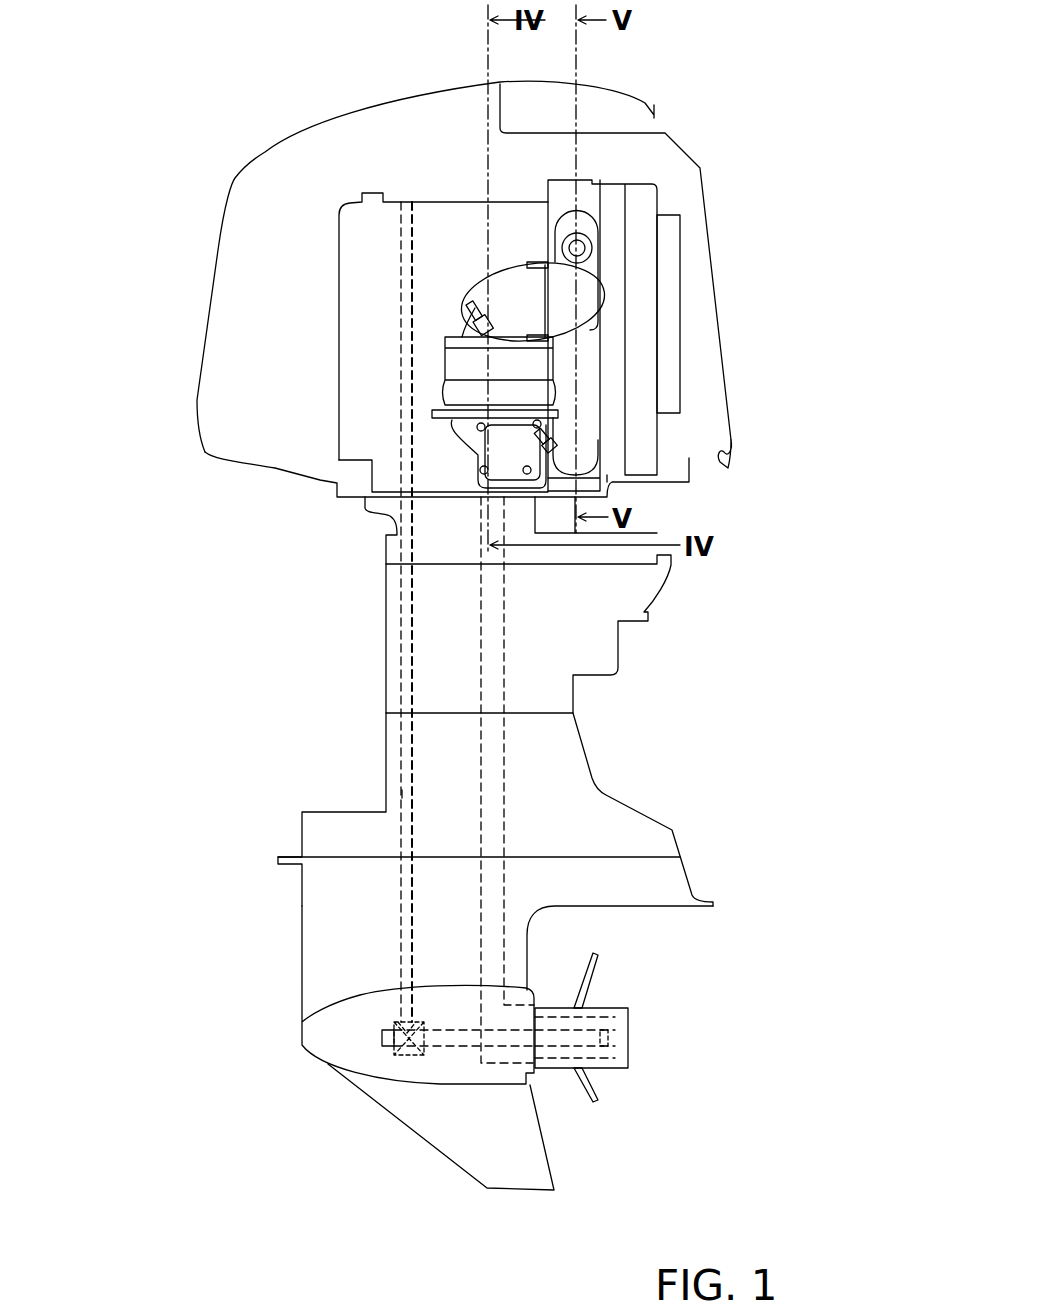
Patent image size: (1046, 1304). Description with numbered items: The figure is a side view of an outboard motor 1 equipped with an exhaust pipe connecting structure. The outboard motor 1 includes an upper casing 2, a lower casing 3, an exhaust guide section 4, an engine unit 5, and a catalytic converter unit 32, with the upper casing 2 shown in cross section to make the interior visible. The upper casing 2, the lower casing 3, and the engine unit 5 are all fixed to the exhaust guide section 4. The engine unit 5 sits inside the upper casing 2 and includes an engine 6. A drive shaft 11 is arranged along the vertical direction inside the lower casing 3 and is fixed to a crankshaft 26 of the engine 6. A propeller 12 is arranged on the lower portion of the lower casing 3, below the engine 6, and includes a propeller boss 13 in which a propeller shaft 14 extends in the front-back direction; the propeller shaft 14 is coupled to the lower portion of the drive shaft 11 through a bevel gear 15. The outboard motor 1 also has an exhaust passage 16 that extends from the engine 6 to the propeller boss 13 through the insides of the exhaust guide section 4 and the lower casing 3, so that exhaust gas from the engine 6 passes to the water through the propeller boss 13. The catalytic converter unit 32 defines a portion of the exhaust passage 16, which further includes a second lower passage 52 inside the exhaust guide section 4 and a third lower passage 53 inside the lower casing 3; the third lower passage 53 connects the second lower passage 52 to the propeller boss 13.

The outboard motor 1 is at (263, 82).
The upper casing 2 is at (265, 152).
The lower casing 3 is at (385, 737).
The exhaust guide section 4 is at (395, 535).
The engine unit 5 is at (320, 336).
The engine 6 is at (435, 205).
The drive shaft 11 is at (402, 787).
The propeller 12 is at (652, 1043).
The propeller boss 13 is at (555, 1070).
The propeller shaft 14 is at (458, 1046).
The bevel gear 15 is at (395, 1048).
The exhaust passage 16 is at (530, 652).
The crankshaft 26 is at (412, 397).
The catalytic converter unit 32 is at (451, 296).
The second lower passage 52 is at (481, 543).
The third lower passage 53 is at (481, 690).